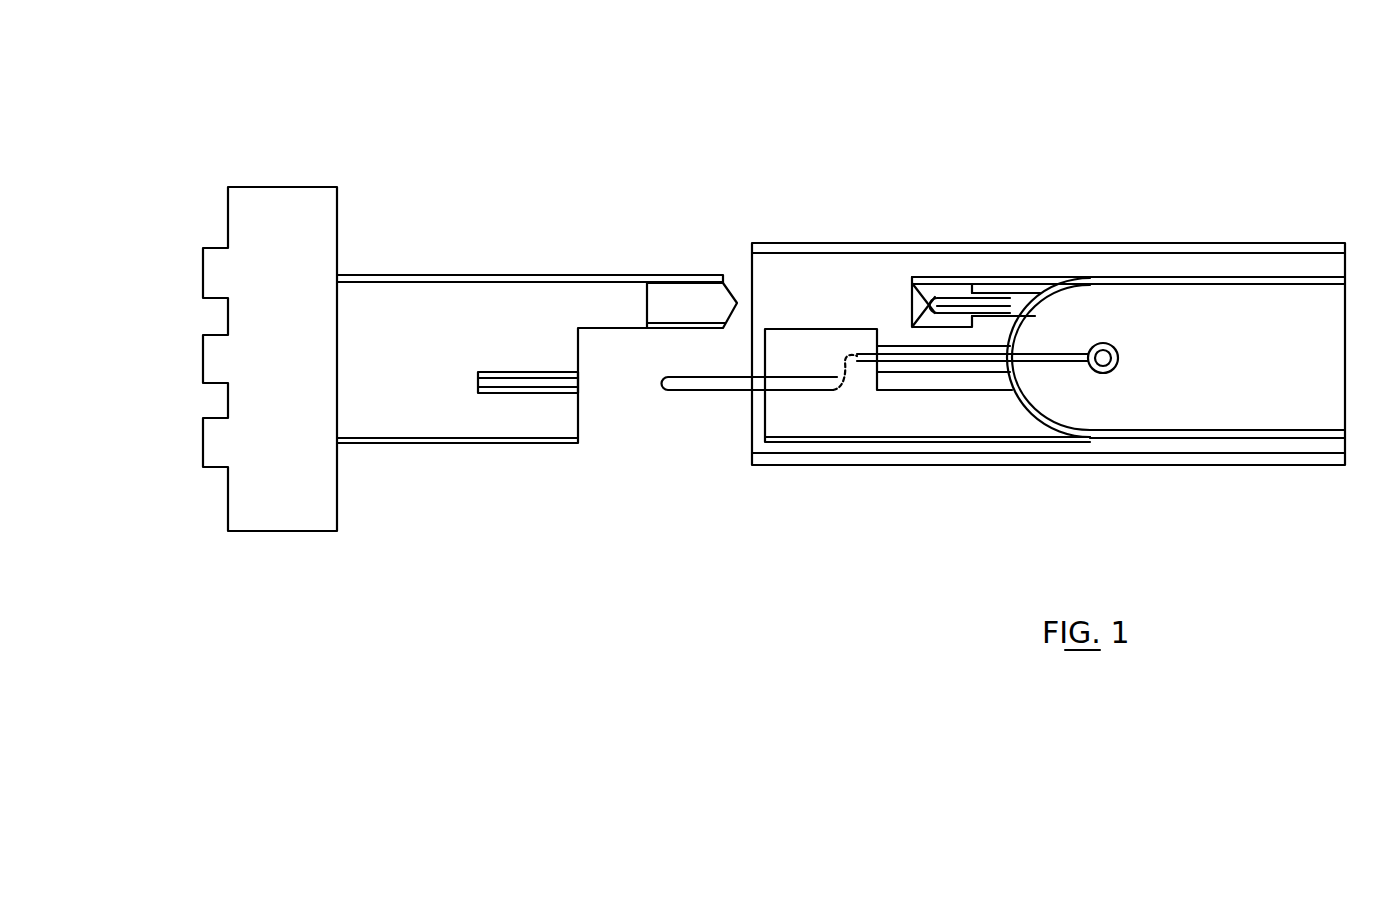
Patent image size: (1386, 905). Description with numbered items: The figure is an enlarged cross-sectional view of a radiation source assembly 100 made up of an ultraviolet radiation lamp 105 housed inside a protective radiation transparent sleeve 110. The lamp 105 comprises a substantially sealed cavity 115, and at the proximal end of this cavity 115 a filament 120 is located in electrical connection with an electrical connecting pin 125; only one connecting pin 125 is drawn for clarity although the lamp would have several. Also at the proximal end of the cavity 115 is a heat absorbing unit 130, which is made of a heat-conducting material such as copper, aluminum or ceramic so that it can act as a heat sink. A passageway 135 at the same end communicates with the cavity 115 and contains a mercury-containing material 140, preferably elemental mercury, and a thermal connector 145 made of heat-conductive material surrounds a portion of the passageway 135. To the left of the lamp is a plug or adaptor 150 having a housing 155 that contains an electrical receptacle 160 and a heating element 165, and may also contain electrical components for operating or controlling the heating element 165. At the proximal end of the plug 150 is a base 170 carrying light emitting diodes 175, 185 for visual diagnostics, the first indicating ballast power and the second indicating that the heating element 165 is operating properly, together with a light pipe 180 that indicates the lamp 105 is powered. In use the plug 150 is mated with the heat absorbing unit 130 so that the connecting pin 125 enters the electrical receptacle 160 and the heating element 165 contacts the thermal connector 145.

The radiation source assembly 100 is at (1019, 340).
The ultraviolet radiation lamp 105 is at (1153, 282).
The protective radiation transparent sleeve 110 is at (1283, 252).
The sealed cavity 115 is at (1248, 381).
The filament 120 is at (1103, 343).
The electrical connecting pin 125 is at (733, 387).
The heat absorbing unit 130 is at (895, 418).
The passageway 135 is at (987, 300).
The mercury-containing material 140 is at (930, 298).
The thermal connector 145 is at (952, 285).
The plug 150 is at (436, 341).
The housing 155 is at (415, 418).
The electrical receptacle 160 is at (508, 395).
The heating element 165 is at (718, 210).
The base 170 is at (280, 515).
The light emitting diode 175 is at (198, 280).
The light pipe 180 is at (192, 363).
The light emitting diode 185 is at (197, 448).